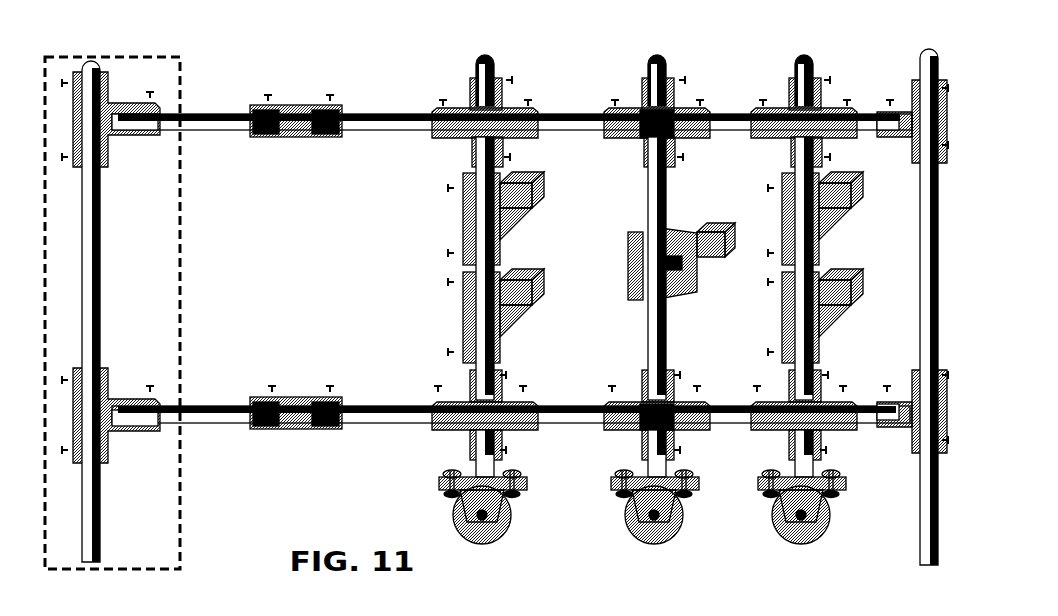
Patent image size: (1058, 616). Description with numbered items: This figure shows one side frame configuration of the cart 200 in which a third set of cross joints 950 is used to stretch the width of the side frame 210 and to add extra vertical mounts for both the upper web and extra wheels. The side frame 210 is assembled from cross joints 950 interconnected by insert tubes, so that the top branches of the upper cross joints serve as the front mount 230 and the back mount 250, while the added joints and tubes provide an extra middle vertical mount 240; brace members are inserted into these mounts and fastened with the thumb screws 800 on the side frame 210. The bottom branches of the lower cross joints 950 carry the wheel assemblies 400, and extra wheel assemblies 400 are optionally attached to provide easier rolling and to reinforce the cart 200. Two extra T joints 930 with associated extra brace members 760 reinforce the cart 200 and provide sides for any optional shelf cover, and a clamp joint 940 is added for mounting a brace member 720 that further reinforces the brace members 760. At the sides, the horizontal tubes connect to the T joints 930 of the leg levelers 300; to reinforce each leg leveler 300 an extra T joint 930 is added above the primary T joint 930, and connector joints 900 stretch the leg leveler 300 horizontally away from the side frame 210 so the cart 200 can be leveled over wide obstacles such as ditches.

The cart 200 is at (420, 91).
The side frame 210 is at (587, 112).
The front mount 230 is at (817, 77).
The vertical mount 240 is at (683, 77).
The back mount 250 is at (505, 77).
The leg leveler 300 is at (185, 178).
The wheel assembly 400 is at (434, 502).
The brace member 720 is at (715, 227).
The brace member 760 is at (534, 293).
The thumb screw 800 is at (266, 92).
The connector joint 900 is at (293, 136).
The T joint 930 is at (112, 137).
The clamp joint 940 is at (628, 270).
The cross joint 950 is at (453, 137).